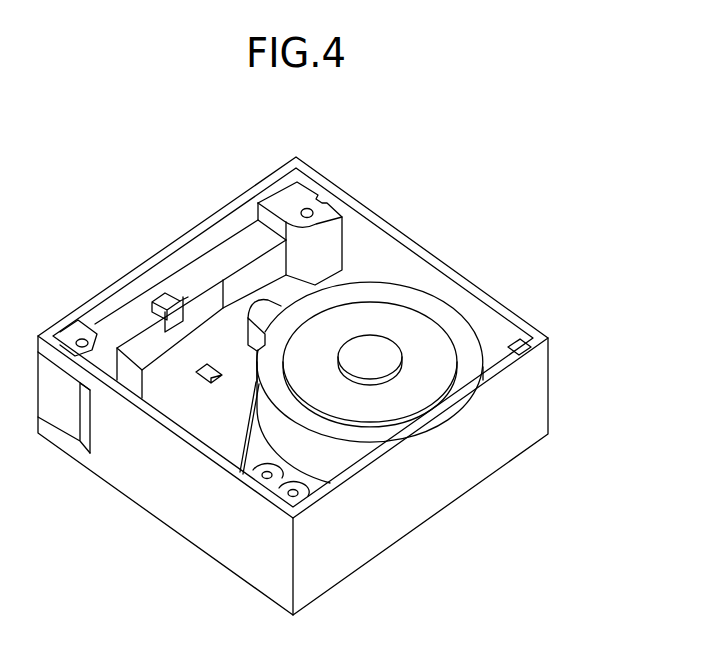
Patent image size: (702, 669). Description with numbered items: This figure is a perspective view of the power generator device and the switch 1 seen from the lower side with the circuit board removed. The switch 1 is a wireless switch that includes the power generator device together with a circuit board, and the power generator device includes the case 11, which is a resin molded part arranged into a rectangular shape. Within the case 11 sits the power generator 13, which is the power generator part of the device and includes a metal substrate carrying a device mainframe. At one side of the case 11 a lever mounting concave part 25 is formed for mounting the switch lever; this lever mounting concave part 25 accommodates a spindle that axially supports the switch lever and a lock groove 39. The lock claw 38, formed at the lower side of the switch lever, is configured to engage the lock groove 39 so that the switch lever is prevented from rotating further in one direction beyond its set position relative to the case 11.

The switch 1 is at (507, 156).
The case 11 is at (452, 472).
The power generator 13 is at (417, 311).
The lever mounting concave part 25 is at (213, 270).
The lock claw 38 is at (162, 297).
The lock groove 39 is at (171, 293).